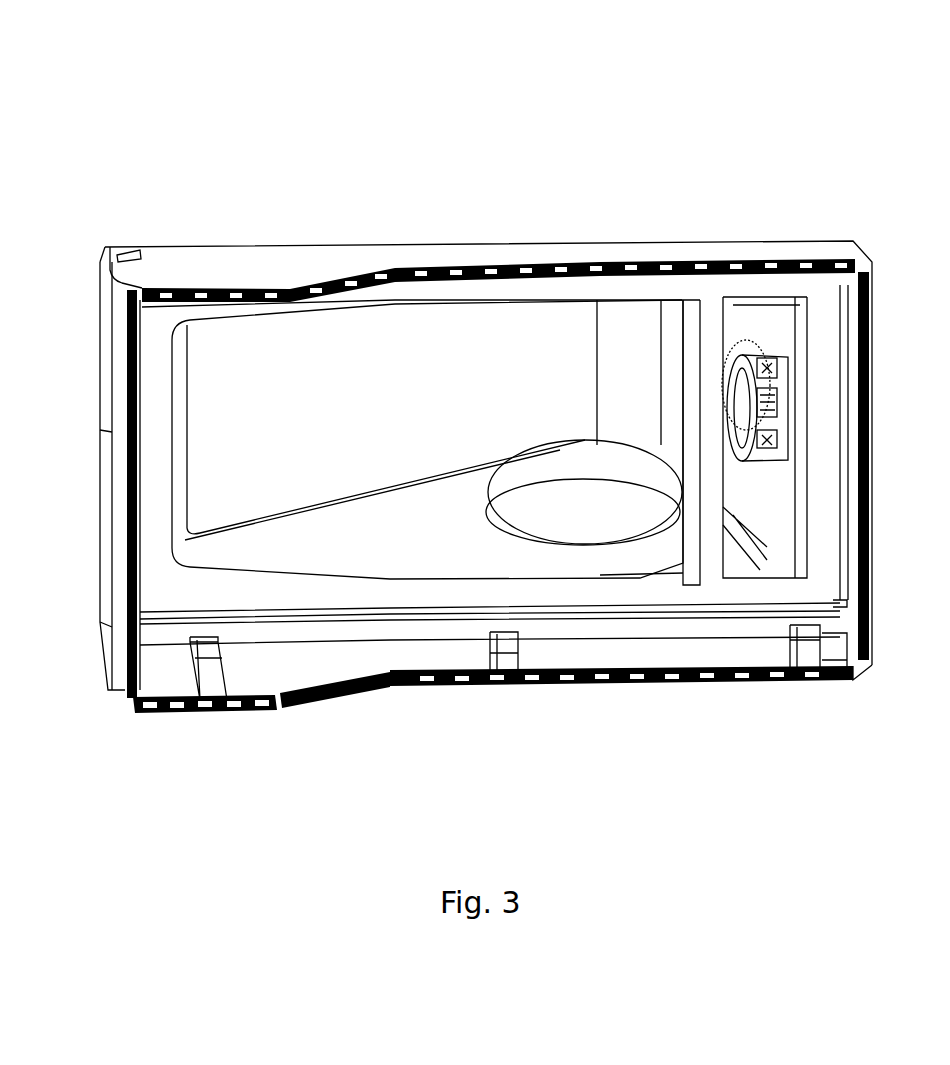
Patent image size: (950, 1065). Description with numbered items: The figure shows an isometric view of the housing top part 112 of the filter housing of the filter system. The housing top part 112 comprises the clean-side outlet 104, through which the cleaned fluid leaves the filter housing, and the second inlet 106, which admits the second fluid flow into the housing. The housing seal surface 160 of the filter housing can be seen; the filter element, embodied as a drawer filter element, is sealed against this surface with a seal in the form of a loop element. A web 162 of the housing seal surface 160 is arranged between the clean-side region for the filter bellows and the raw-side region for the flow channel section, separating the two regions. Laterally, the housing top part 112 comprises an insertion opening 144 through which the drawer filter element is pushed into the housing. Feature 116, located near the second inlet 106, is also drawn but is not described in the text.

The housing top part 112 is at (311, 162).
The insertion opening 144 is at (92, 330).
The second inlet 106 is at (772, 360).
The terminals 116 is at (800, 378).
The clean-side outlet 104 is at (620, 490).
The housing seal surface 160 is at (537, 593).
The web 162 is at (697, 547).